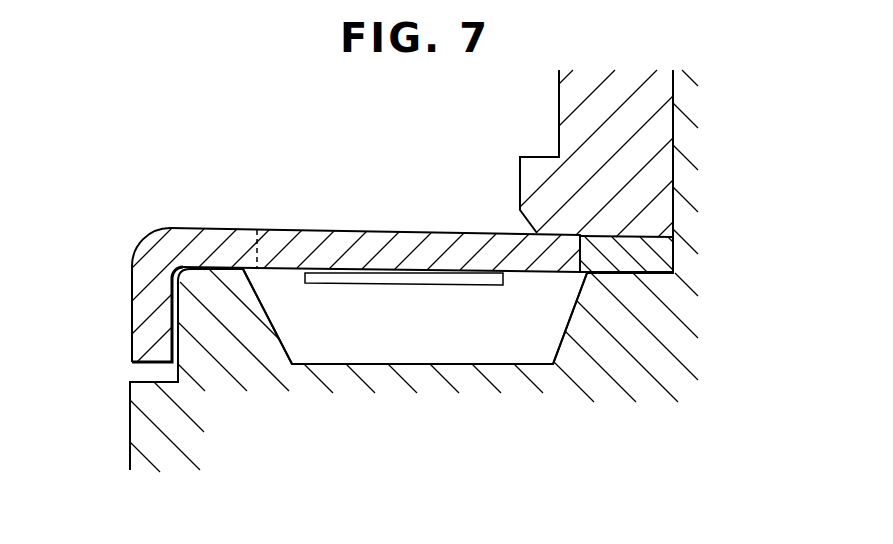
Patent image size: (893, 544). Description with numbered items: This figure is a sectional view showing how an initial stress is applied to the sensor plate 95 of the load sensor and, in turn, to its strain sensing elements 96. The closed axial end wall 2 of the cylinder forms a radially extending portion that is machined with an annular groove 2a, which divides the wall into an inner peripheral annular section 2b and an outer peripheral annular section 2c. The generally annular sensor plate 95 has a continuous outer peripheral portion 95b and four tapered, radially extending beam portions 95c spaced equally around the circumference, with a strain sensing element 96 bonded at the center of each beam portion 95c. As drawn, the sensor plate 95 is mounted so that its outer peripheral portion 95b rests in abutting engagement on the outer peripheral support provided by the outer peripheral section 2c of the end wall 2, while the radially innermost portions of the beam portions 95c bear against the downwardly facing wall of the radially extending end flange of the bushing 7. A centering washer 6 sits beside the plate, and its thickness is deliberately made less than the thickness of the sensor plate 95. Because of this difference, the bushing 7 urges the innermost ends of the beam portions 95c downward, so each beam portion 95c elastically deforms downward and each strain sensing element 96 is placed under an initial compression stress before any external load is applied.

The closed axial end wall 2 is at (130, 427).
The annular groove 2a is at (418, 345).
The inner peripheral annular section 2b is at (640, 272).
The outer peripheral annular section 2c is at (211, 262).
The centering washer 6 is at (668, 257).
The bushing 7 is at (559, 107).
The sensor plate 95 is at (353, 231).
The continuous outer peripheral portion 95b is at (223, 233).
The radially extending beam portions 95c is at (437, 243).
The strain sensing elements 96 is at (493, 285).